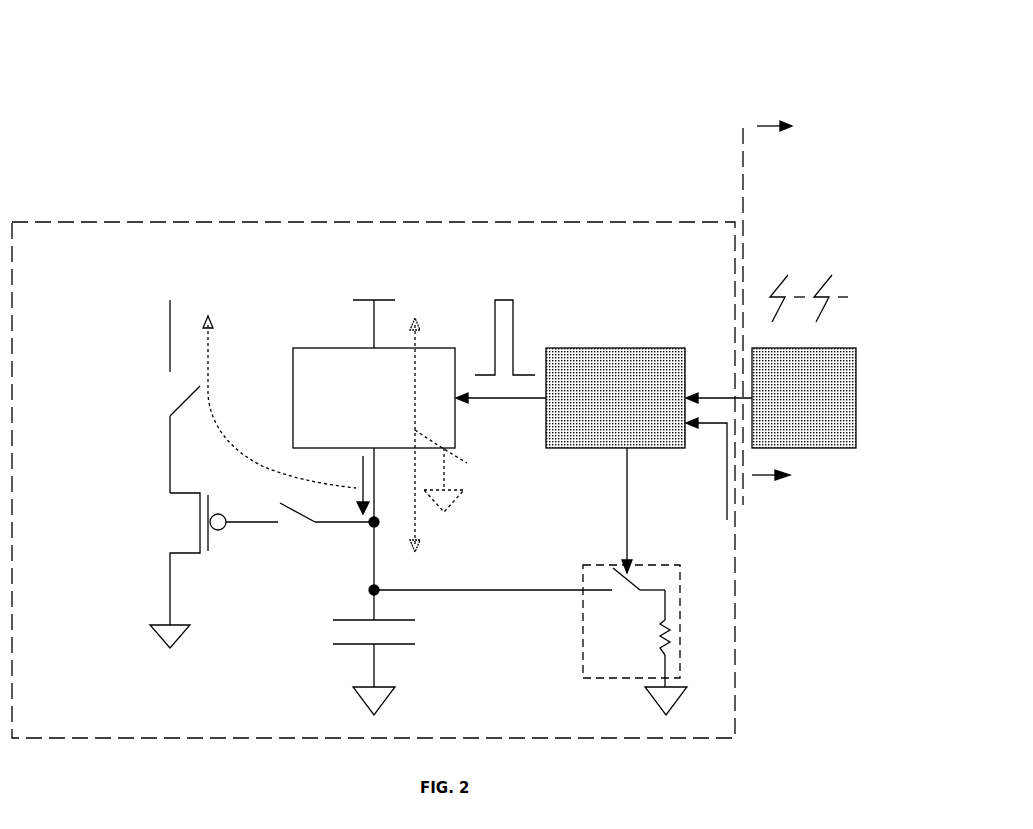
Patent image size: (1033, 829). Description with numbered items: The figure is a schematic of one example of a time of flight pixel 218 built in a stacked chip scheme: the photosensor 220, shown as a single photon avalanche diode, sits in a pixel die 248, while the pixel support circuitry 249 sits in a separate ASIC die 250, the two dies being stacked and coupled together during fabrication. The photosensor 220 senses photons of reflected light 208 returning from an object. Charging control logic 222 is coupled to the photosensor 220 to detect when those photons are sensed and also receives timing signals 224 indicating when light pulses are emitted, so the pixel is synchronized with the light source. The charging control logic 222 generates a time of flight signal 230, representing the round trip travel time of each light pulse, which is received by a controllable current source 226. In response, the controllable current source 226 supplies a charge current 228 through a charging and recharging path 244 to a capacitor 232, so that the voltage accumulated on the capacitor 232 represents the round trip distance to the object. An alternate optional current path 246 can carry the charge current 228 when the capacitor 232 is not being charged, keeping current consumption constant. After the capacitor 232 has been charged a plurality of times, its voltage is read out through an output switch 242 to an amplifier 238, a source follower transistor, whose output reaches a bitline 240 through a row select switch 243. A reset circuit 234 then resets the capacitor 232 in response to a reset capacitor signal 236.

The time of flight pixel 218 is at (151, 19).
The pixel support circuitry 249 is at (373, 480).
The ASIC die 250 is at (636, 172).
The pixel die 248 is at (782, 313).
The reflected light 208 is at (852, 246).
The bitline 240 is at (137, 396).
The row select switch 243 is at (170, 397).
The amplifier 238 is at (153, 570).
The output switch 242 is at (286, 530).
The charge current 228 is at (300, 464).
The controllable current source 226 is at (374, 407).
The charging and recharging path 244 is at (490, 534).
The capacitor 232 is at (397, 657).
The time of flight signal 230 is at (497, 292).
The optional current path 246 is at (470, 458).
The charging control logic 222 is at (570, 398).
The photosensor 220 is at (771, 398).
The timing signals 224 is at (705, 500).
The reset capacitor signal 236 is at (663, 510).
The reset circuit 234 is at (583, 672).